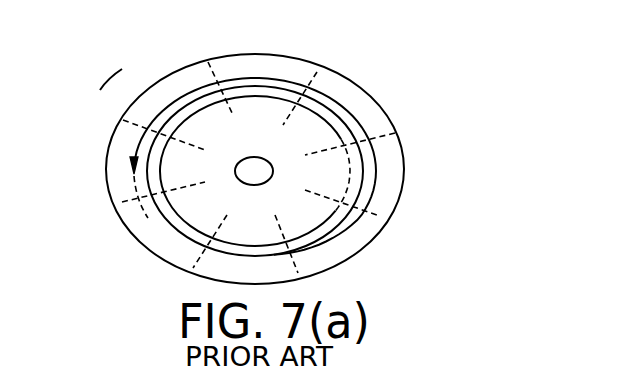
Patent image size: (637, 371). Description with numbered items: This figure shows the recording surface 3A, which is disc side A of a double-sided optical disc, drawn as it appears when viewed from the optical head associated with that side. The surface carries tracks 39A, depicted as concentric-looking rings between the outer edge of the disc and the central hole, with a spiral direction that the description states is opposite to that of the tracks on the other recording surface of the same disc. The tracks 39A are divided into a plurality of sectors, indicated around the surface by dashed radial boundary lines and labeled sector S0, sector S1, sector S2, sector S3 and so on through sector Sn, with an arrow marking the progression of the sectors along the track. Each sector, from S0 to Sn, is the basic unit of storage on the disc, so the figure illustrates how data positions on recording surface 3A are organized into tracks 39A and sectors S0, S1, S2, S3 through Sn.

The recording surface 3A is at (396, 198).
The tracks 39A is at (343, 104).
The sector S0 is at (139, 129).
The sector S1 is at (210, 73).
The sector S2 is at (314, 78).
The sector S3 is at (369, 135).
The sector Sn is at (141, 203).